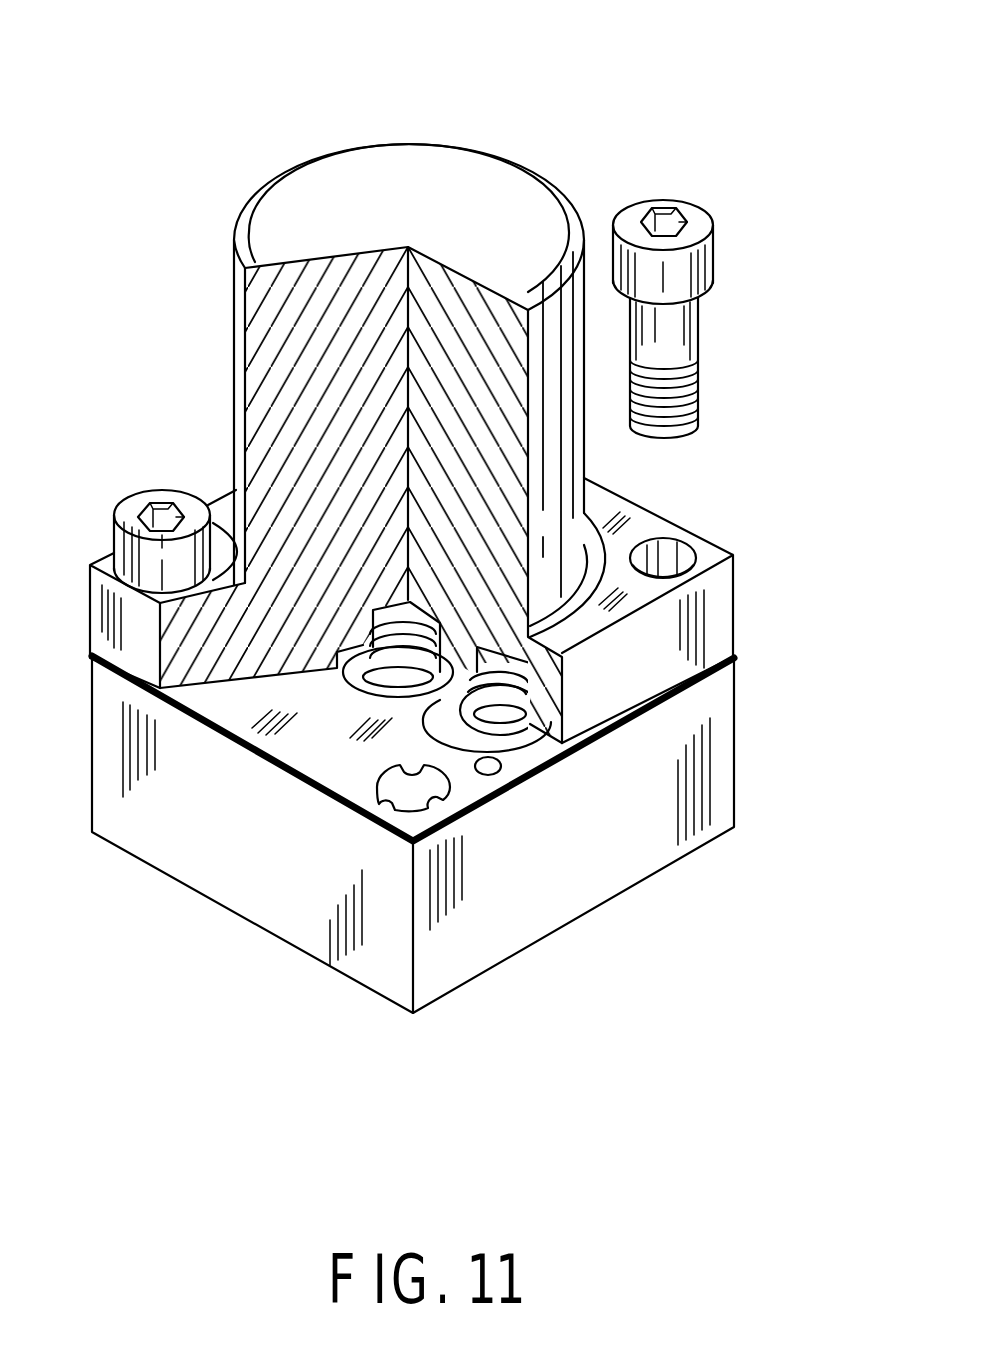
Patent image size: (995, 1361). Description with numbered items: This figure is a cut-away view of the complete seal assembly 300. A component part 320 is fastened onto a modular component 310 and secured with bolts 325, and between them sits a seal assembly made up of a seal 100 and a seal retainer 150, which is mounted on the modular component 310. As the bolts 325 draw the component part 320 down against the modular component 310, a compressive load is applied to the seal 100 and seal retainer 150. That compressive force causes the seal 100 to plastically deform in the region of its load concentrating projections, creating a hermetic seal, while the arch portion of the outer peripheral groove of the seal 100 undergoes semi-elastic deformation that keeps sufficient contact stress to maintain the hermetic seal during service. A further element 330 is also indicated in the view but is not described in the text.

The seal assembly 300 is at (140, 138).
The component part 320 is at (428, 178).
The bolts 325 is at (670, 270).
The spring contact insert 330 is at (408, 618).
The seal 100 is at (560, 750).
The seal retainer 150 is at (350, 780).
The modular component 310 is at (543, 887).